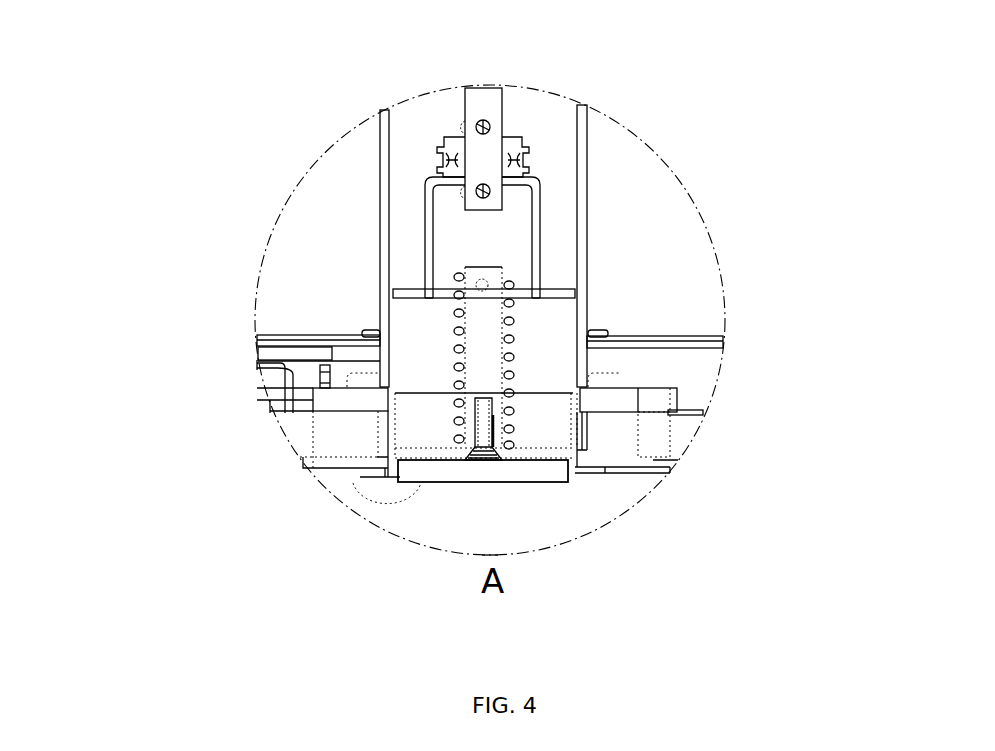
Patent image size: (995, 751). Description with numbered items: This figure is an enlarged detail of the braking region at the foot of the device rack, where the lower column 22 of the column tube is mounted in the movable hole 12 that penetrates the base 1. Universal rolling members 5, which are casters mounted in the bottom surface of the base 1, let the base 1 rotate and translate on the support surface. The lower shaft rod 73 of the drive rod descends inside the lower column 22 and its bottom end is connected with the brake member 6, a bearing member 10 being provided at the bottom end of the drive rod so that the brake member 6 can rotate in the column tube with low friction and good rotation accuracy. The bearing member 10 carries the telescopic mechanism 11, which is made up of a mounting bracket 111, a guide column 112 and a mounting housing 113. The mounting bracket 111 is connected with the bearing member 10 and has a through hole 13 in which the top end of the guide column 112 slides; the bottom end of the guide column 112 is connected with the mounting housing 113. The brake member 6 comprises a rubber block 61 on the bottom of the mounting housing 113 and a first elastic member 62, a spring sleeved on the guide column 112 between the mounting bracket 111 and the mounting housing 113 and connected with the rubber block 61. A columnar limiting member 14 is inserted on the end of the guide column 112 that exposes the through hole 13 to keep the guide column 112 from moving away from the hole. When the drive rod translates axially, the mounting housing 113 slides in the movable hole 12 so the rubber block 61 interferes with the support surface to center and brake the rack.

The base 1 is at (690, 336).
The universal rolling member 5 is at (387, 495).
The brake member 6 is at (600, 485).
The bearing member 10 is at (437, 152).
The telescopic mechanism 11 is at (295, 361).
The movable hole 12 is at (600, 337).
The through hole 13 is at (486, 398).
The limiting member 14 is at (462, 290).
The lower column 22 is at (380, 198).
The rubber block 61 is at (472, 470).
The first elastic member 62 is at (510, 402).
The lower shaft rod 73 is at (484, 106).
The mounting bracket 111 is at (433, 245).
The guide column 112 is at (482, 333).
The mounting housing 113 is at (383, 437).